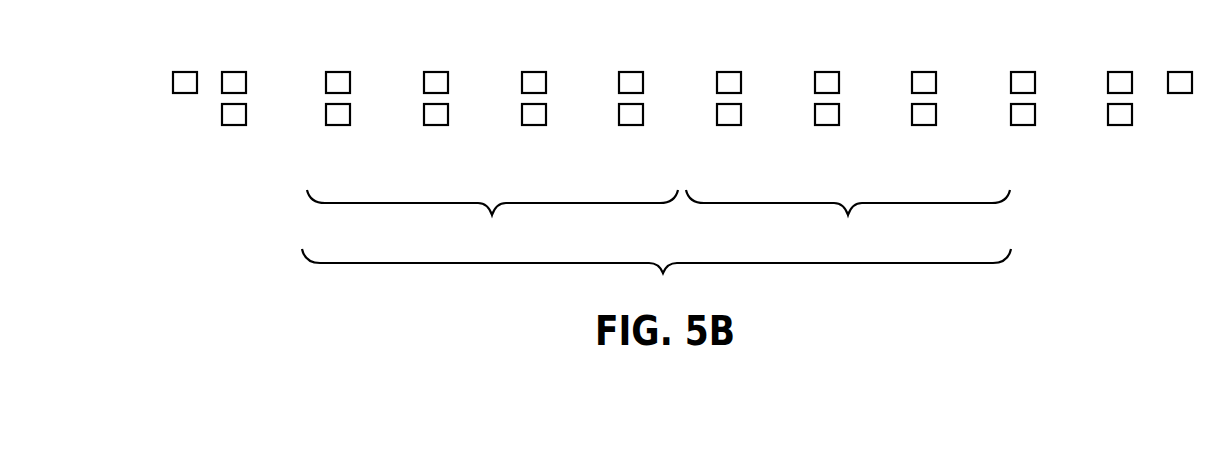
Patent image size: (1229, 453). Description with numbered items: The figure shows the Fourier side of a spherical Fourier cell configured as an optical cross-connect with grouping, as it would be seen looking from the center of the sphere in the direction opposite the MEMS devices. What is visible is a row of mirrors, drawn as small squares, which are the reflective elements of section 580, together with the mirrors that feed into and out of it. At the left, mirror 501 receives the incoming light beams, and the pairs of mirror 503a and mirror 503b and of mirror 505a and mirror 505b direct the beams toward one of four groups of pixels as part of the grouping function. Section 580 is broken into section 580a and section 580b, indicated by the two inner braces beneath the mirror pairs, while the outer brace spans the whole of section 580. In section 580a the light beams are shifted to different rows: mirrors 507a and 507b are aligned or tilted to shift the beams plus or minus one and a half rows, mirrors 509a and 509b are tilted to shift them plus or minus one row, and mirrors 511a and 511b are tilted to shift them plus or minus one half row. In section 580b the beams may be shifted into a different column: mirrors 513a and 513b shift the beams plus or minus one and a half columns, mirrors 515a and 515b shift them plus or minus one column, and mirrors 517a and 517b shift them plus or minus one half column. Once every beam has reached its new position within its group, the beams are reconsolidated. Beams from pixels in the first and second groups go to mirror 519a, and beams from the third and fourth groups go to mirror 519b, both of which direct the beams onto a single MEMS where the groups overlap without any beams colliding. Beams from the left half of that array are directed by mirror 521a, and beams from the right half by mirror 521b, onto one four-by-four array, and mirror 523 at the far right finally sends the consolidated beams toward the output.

The mirror 501 is at (184, 93).
The mirror 523 is at (1180, 93).
The mirror 503a is at (233, 72).
The mirror 503b is at (233, 125).
The mirror 505a is at (337, 72).
The mirror 505b is at (337, 125).
The mirror 507a is at (435, 72).
The mirror 507b is at (435, 125).
The mirror 509a is at (533, 72).
The mirror 509b is at (533, 125).
The mirror 511a is at (630, 72).
The mirror 511b is at (630, 125).
The mirror 513a is at (728, 72).
The mirror 513b is at (728, 125).
The mirror 515a is at (826, 72).
The mirror 515b is at (826, 125).
The mirror 517a is at (923, 72).
The mirror 517b is at (923, 125).
The mirror 519a is at (1022, 72).
The mirror 519b is at (1022, 125).
The mirror 521a is at (1119, 72).
The mirror 521b is at (1119, 125).
The section 580a is at (492, 217).
The section 580b is at (848, 216).
The section 580 is at (656, 276).